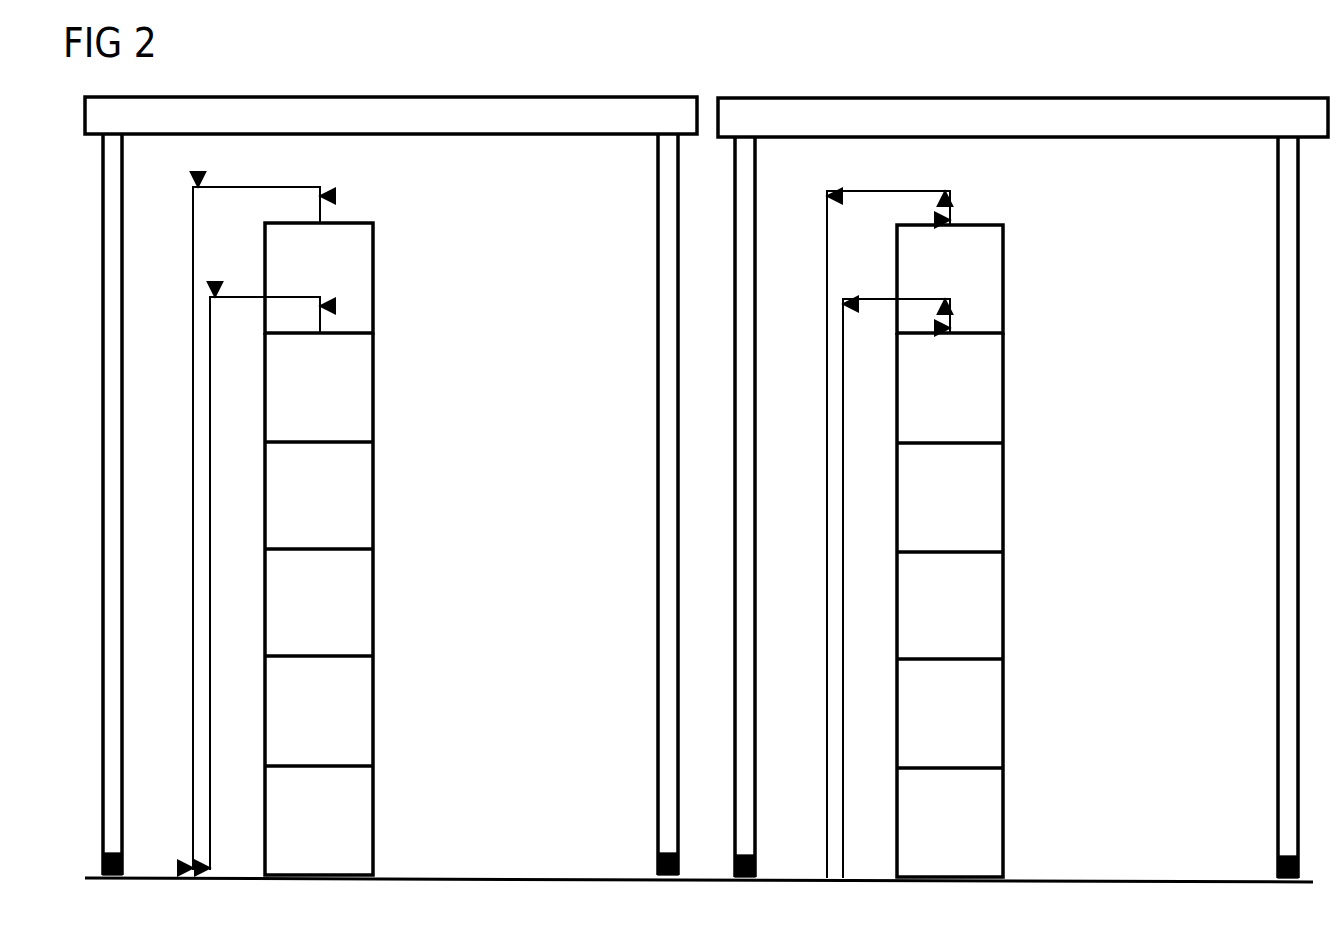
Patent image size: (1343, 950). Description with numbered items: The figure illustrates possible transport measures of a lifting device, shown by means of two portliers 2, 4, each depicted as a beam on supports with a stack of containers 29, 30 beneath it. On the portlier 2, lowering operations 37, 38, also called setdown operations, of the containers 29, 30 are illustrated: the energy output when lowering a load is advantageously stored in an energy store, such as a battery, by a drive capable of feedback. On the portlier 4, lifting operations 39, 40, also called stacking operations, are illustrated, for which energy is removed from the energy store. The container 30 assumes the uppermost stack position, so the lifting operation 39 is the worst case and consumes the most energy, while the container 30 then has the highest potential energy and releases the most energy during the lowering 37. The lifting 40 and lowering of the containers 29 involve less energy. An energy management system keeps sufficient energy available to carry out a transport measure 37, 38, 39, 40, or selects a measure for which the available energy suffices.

The portlier 2 is at (461, 108).
The portlier 4 is at (865, 108).
The container 29 is at (358, 396).
The container 30 is at (358, 286).
The lowering operation 37 is at (192, 285).
The lowering operation 38 is at (210, 452).
The lifting operation 39 is at (826, 288).
The lifting operation 40 is at (843, 455).